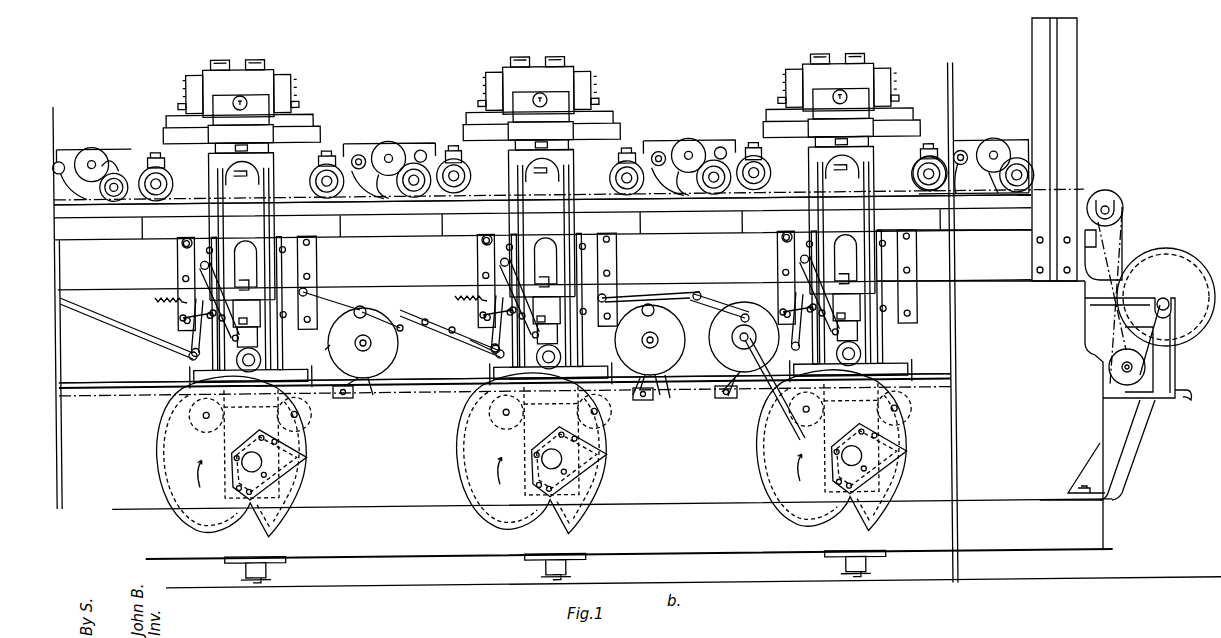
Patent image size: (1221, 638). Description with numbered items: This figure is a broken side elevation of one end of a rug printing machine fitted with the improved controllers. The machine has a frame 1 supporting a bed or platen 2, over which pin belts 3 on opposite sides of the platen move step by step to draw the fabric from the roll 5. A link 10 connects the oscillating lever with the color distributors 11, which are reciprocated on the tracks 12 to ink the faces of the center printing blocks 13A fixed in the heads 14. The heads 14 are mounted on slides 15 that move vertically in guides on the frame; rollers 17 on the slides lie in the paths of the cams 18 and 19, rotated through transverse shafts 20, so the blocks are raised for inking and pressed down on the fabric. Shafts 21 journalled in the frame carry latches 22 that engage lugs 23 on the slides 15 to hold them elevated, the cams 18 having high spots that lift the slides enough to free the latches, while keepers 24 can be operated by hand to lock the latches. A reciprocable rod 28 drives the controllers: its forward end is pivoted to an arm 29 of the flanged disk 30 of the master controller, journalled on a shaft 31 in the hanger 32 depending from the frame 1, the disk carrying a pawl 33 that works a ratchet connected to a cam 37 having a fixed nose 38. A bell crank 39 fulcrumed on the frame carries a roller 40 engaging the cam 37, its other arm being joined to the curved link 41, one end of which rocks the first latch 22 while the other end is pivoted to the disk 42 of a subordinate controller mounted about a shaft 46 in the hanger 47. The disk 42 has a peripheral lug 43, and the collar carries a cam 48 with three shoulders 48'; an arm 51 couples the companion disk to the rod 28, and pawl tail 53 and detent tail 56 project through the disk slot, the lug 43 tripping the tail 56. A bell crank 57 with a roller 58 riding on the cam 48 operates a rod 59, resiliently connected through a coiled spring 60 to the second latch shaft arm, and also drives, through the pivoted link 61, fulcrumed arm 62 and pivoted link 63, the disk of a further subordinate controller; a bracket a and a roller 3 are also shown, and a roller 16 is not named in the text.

The frame 1 is at (1000, 275).
The bed or platen 2 is at (928, 225).
The pin belts 3 is at (925, 160).
The bracket a is at (1110, 262).
The roll 5 is at (1160, 305).
The link 10 is at (285, 195).
The color distributors 11 is at (95, 150).
The tracks 12 is at (998, 205).
The center printing blocks 13A is at (318, 138).
The heads 14 is at (305, 125).
The slides 15 is at (210, 228).
The pivot hole 16 is at (187, 244).
The rollers 17 is at (260, 360).
The cams 18 is at (200, 522).
The cams 19 is at (300, 488).
The transverse shafts 20 is at (258, 462).
The shafts 21 is at (203, 266).
The latches 22 is at (222, 318).
The lugs 23 is at (243, 322).
The keepers 24 is at (190, 318).
The reciprocable rod 28 is at (120, 390).
The arm 29 is at (725, 398).
The flanged disk 30 is at (793, 425).
The shaft 31 is at (783, 391).
The hanger 32 is at (730, 305).
The pawl 33 is at (712, 355).
The cam 37 is at (700, 398).
The fixed shoulder or nose 38 is at (810, 380).
The bell crank 39 is at (700, 292).
The roller 40 is at (745, 315).
The curved link 41 is at (680, 292).
The disk 42 is at (372, 398).
The peripheral lug or stop 43 is at (672, 400).
The shaft 46 is at (365, 345).
The hanger 47 is at (640, 295).
The cam 48 is at (625, 407).
The projections or shoulders 48' is at (514, 389).
The arm 51 is at (342, 398).
The tail 53 is at (319, 355).
The tail 56 is at (400, 318).
The bell crank 57 is at (622, 290).
The roller 58 is at (368, 305).
The rod 59 is at (422, 311).
The coiled spring 60 is at (449, 322).
The pivoted link 61 is at (495, 348).
The fulcrumed arm 62 is at (472, 346).
The pivoted link 63 is at (120, 335).